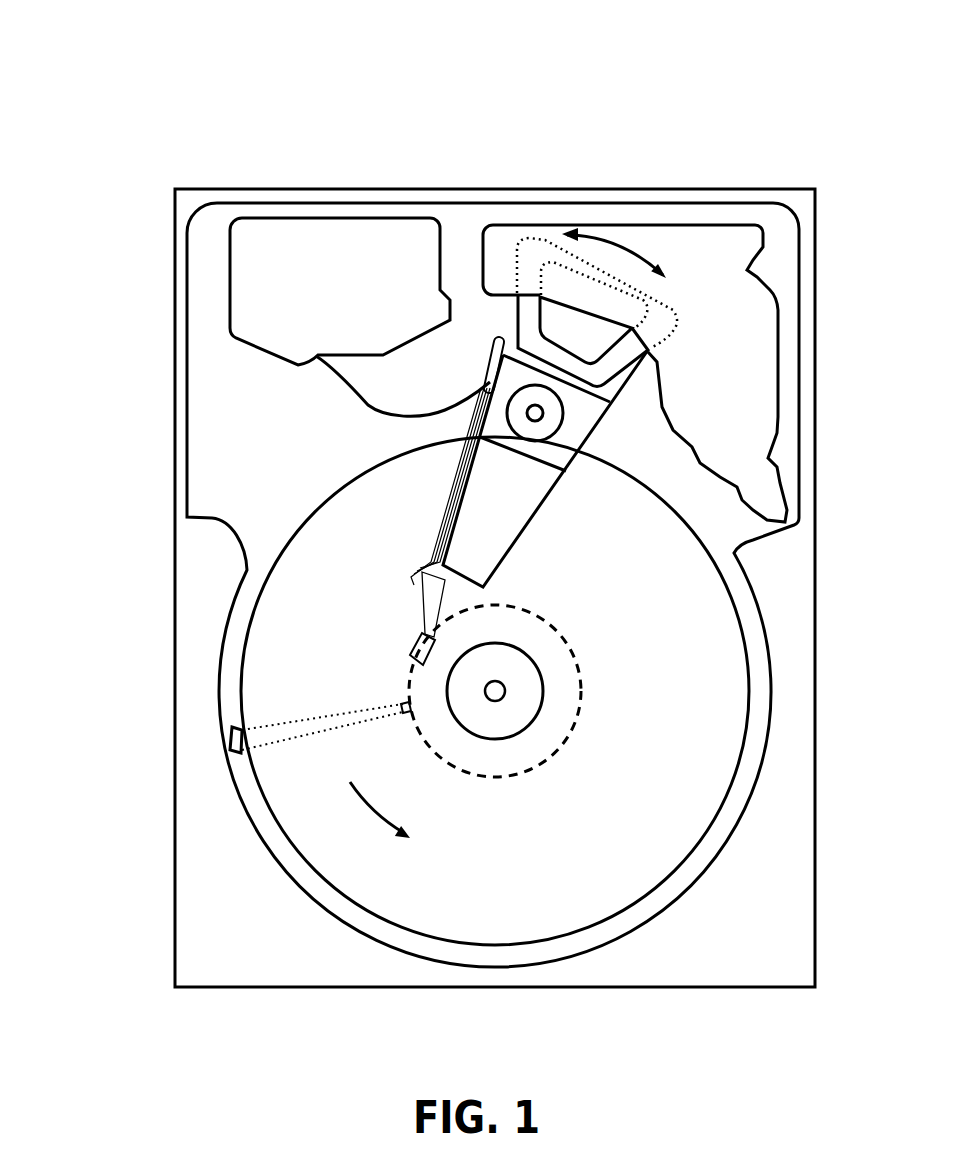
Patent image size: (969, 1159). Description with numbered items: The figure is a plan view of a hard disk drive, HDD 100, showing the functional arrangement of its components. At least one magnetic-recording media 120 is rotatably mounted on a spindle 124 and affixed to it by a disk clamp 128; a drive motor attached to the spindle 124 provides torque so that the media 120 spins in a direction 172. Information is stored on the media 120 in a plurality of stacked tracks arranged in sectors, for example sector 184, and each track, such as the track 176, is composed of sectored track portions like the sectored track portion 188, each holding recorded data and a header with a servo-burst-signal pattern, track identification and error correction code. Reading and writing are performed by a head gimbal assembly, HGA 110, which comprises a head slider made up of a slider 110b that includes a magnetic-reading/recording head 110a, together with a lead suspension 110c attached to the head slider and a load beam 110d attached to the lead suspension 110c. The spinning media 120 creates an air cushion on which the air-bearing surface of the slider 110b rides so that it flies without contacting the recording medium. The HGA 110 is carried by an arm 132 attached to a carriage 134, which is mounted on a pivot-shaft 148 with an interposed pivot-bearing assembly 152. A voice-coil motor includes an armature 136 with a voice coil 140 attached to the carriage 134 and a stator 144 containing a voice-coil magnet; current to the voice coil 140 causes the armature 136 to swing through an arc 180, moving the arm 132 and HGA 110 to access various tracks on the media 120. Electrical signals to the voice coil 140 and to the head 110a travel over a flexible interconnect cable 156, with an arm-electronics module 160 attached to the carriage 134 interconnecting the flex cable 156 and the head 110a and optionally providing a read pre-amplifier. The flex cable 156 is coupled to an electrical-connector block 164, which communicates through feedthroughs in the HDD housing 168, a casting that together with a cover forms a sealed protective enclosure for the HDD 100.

The hard disk drive 100 is at (101, 62).
The head gimbal assembly 110 is at (266, 511).
The magnetic-reading/recording head 110a is at (418, 604).
The slider 110b is at (427, 586).
The lead suspension 110c is at (432, 572).
The load beam 110d is at (440, 556).
The magnetic-recording media 120 is at (677, 645).
The spindle 124 is at (500, 693).
The disk clamp 128 is at (520, 710).
The arm 132 is at (487, 528).
The carriage 134 is at (553, 447).
The armature 136 is at (514, 330).
The voice coil 140 is at (530, 307).
The stator 144 is at (745, 315).
The pivot-shaft 148 is at (543, 413).
The pivot-bearing assembly 152 is at (548, 428).
The flexible interconnect cable 156 is at (368, 393).
The arm-electronics module 160 is at (485, 381).
The electrical-connector block 164 is at (255, 290).
The HDD housing 168 is at (795, 205).
The direction 172 is at (383, 813).
The track 176 is at (573, 650).
The arc 180 is at (612, 245).
The sector 184 is at (238, 732).
The sectored track portion 188 is at (405, 703).